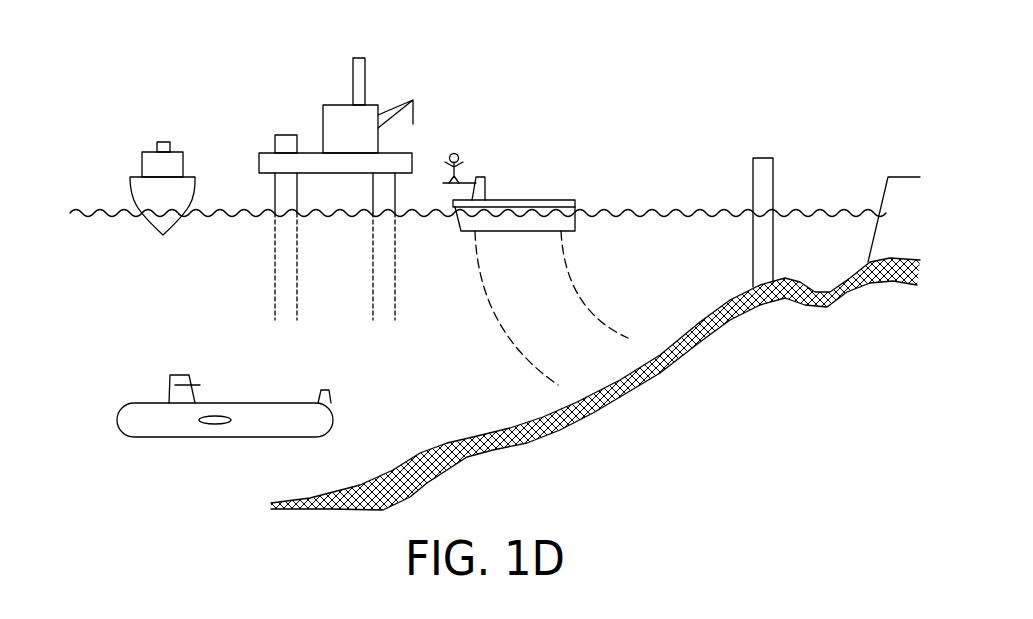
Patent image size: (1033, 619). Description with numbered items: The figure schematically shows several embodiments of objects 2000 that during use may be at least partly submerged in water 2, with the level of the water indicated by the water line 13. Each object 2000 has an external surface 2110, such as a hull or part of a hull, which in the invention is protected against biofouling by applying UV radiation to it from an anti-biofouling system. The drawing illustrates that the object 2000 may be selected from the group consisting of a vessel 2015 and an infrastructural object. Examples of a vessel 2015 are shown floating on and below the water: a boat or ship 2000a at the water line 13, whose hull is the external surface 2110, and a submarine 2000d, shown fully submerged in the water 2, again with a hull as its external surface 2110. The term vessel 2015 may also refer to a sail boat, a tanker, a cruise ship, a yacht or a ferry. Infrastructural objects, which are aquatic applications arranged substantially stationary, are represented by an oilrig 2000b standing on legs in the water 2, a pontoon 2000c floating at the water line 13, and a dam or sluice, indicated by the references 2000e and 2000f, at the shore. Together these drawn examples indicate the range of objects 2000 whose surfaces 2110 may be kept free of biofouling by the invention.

The water 2 is at (478, 186).
The water line 13 is at (688, 208).
The object 2000 is at (524, 110).
The boat or ship 2000a is at (157, 146).
The oilrig 2000b is at (381, 85).
The pontoon 2000c is at (519, 192).
The submarine 2000d is at (137, 385).
The dam/sluice 2000e is at (775, 142).
The dam/sluice 2000f is at (872, 180).
The vessel 2015 is at (190, 125).
The external surface 2110 is at (130, 192).